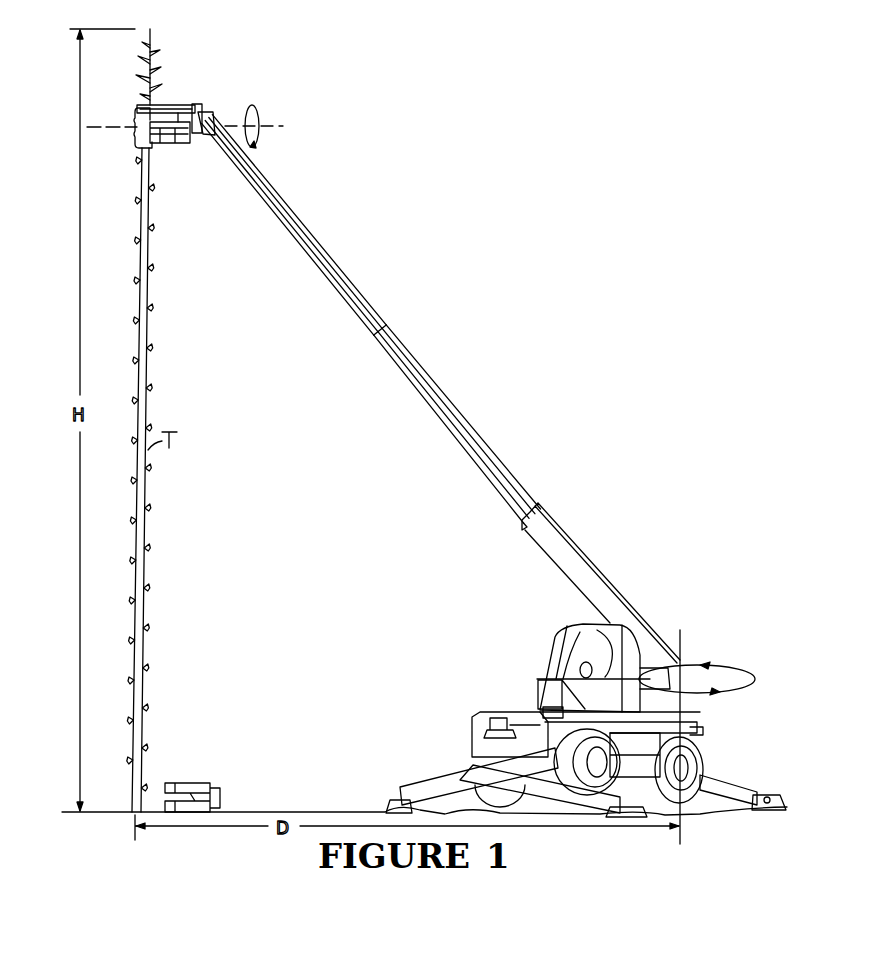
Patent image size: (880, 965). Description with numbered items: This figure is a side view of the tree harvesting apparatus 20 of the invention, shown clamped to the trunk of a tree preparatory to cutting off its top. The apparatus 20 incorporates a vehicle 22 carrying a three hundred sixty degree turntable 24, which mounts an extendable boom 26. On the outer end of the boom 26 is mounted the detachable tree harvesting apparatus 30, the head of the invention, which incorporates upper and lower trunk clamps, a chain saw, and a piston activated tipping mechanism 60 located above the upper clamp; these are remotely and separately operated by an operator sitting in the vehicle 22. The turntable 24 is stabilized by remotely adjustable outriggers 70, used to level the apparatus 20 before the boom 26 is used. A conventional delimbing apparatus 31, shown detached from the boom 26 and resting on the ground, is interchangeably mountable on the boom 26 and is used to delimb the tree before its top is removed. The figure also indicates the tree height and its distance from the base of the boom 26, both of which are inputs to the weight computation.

The apparatus 20 is at (478, 348).
The vehicle 22 is at (532, 683).
The turntable 24 is at (708, 711).
The extendable boom 26 is at (366, 290).
The tree harvesting apparatus 30 is at (180, 150).
The delimbing apparatus 31 is at (202, 783).
The tipping mechanism 60 is at (188, 100).
The outriggers 70 is at (440, 788).